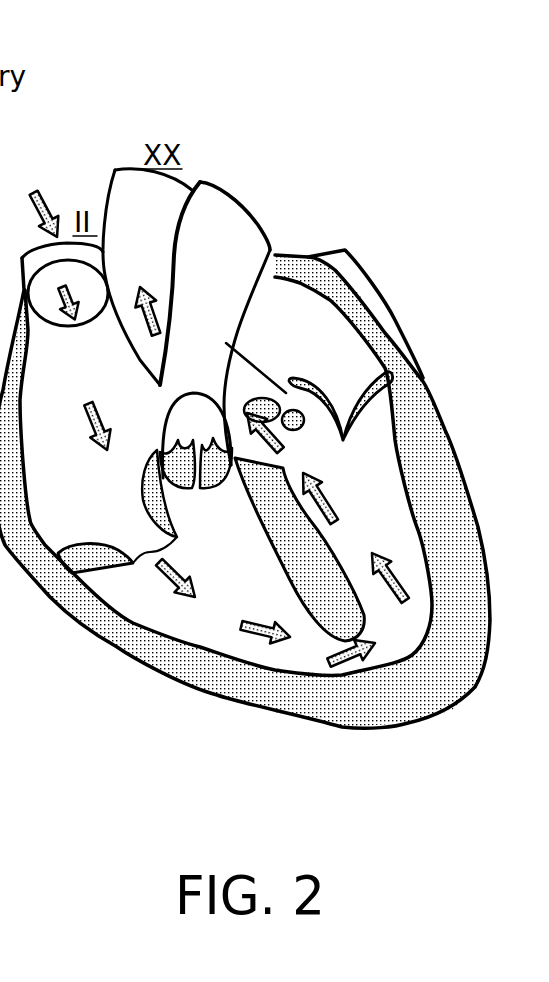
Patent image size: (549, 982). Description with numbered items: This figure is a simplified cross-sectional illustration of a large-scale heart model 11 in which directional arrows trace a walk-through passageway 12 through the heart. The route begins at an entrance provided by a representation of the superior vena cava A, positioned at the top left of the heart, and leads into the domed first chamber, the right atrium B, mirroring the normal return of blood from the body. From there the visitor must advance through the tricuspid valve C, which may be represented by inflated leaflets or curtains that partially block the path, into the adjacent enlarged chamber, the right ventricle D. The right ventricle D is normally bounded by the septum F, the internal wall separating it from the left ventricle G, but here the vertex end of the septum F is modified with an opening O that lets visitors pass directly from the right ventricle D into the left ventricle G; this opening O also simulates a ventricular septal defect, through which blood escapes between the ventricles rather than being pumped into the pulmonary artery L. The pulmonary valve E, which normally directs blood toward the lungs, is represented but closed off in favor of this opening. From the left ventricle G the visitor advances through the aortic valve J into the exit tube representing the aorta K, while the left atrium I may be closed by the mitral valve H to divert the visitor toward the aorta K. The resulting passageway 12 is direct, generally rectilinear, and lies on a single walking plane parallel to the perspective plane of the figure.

The heart model 11 is at (245, 441).
The walk-through passageway 12 is at (46, 195).
The superior vena cava A is at (61, 274).
The right atrium B is at (90, 409).
The tricuspid valve C is at (95, 544).
The right ventricle D is at (221, 600).
The pulmonary valve E is at (182, 478).
The septum F is at (300, 552).
The left ventricle G is at (383, 517).
The mitral valve H is at (425, 378).
The left atrium I is at (345, 347).
The aortic valve J is at (287, 393).
The aorta K is at (151, 277).
The pulmonary artery L is at (242, 323).
The opening O is at (373, 660).